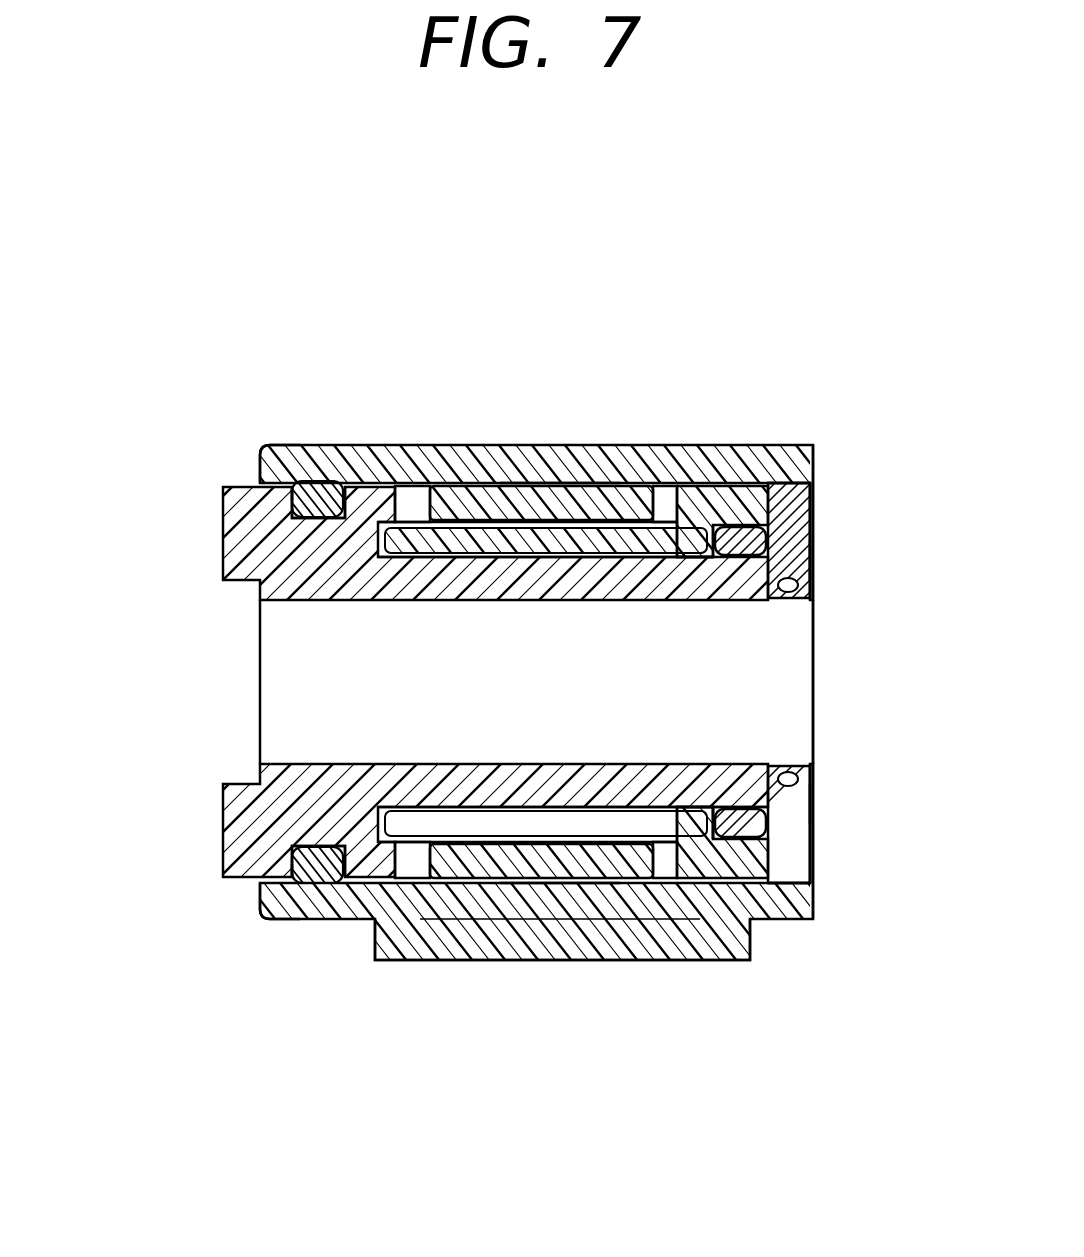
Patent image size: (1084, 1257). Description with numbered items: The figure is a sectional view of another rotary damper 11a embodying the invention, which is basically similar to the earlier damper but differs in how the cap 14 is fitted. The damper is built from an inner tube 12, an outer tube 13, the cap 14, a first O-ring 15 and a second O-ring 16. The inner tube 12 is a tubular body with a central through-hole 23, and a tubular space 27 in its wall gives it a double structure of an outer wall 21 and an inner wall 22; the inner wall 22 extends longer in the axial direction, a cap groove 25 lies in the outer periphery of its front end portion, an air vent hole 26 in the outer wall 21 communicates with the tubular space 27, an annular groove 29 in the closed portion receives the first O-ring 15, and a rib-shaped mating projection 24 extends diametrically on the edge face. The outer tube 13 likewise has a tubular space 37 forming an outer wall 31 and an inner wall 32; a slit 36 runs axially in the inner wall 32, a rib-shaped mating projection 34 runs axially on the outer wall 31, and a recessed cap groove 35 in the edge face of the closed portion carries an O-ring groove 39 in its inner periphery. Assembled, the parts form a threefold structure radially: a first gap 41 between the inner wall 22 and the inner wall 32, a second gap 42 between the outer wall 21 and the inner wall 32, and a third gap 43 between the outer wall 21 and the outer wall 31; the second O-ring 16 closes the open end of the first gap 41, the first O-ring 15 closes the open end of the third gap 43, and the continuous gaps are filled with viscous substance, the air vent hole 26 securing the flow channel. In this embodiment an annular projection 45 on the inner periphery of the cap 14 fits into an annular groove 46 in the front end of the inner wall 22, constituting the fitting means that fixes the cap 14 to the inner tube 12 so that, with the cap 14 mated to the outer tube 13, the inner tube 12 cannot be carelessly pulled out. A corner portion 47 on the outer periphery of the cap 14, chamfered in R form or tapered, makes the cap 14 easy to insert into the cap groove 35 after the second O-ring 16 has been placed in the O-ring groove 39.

The rotary damper 11a is at (660, 378).
The inner tube 12 is at (220, 648).
The outer tube 13 is at (834, 434).
The cap 14 is at (812, 497).
The first O-ring 15 is at (312, 484).
The second O-ring 16 is at (748, 495).
The outer wall 21 is at (618, 488).
The inner wall 22 is at (812, 580).
The through-hole 23 is at (262, 700).
The mating projection 24 is at (240, 540).
The cap groove 25 is at (742, 552).
The air vent hole 26 is at (412, 500).
The tubular space 27 is at (388, 558).
The annular groove 29 is at (290, 498).
The outer wall 31 is at (262, 462).
The inner wall 32 is at (345, 502).
The mating projection 34 is at (628, 940).
The cap groove 35 is at (745, 852).
The slit 36 is at (512, 922).
The tubular space 37 is at (670, 525).
The O-ring groove 39 is at (722, 480).
The first gap 41 is at (578, 552).
The second gap 42 is at (470, 548).
The third gap 43 is at (548, 485).
The annular projection 45 is at (812, 558).
The annular groove 46 is at (792, 595).
The corner portion 47 is at (790, 488).